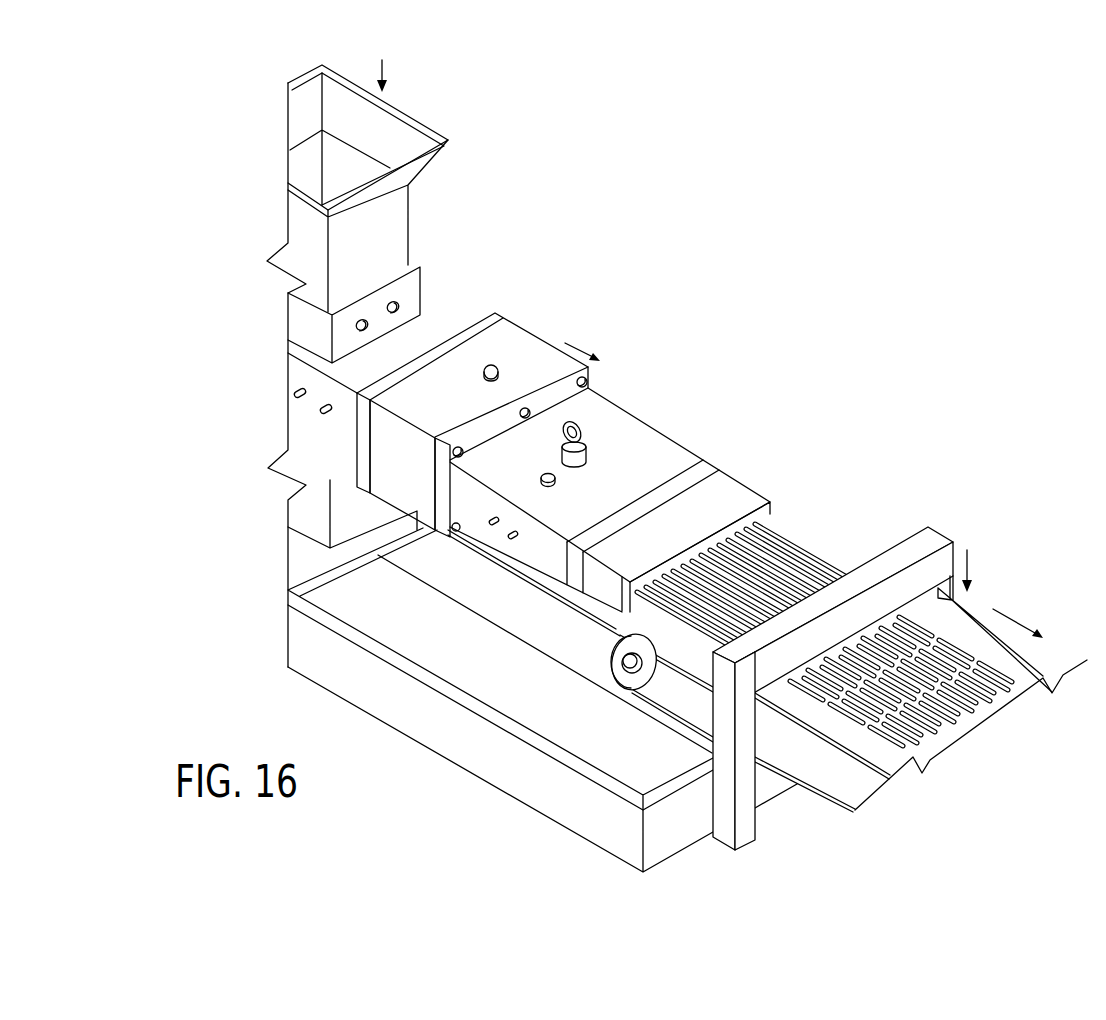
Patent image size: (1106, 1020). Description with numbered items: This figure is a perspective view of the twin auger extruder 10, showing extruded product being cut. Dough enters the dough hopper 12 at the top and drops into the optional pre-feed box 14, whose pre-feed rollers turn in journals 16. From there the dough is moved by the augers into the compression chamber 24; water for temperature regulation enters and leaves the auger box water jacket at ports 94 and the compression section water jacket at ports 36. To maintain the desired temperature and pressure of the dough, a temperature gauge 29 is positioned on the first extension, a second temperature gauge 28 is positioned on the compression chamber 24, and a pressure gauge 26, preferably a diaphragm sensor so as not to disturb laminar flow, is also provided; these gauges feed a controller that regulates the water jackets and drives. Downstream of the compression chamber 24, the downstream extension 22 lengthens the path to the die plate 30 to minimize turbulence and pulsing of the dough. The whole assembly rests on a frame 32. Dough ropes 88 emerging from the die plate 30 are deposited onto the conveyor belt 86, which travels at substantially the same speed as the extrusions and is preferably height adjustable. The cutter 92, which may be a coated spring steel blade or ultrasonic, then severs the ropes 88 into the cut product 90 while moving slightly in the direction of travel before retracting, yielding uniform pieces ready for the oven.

The extruder 10 is at (660, 262).
The dough hopper 12 is at (410, 213).
The pre-feed box 14 is at (420, 282).
The journals 16 is at (401, 306).
The downstream (second) extension 22 is at (752, 492).
The compression chamber 24 is at (556, 334).
The pressure gauge 26 is at (588, 453).
The temperature gauge 28 is at (556, 479).
The temperature gauge 29 is at (493, 366).
The die plate 30 is at (775, 522).
The frame 32 is at (449, 733).
The ports 36 is at (510, 536).
The conveyor belt 86 is at (858, 556).
The dough ropes 88 is at (830, 565).
The cut product 90 is at (978, 707).
The cutter 92 is at (948, 537).
The ports 94 is at (322, 413).